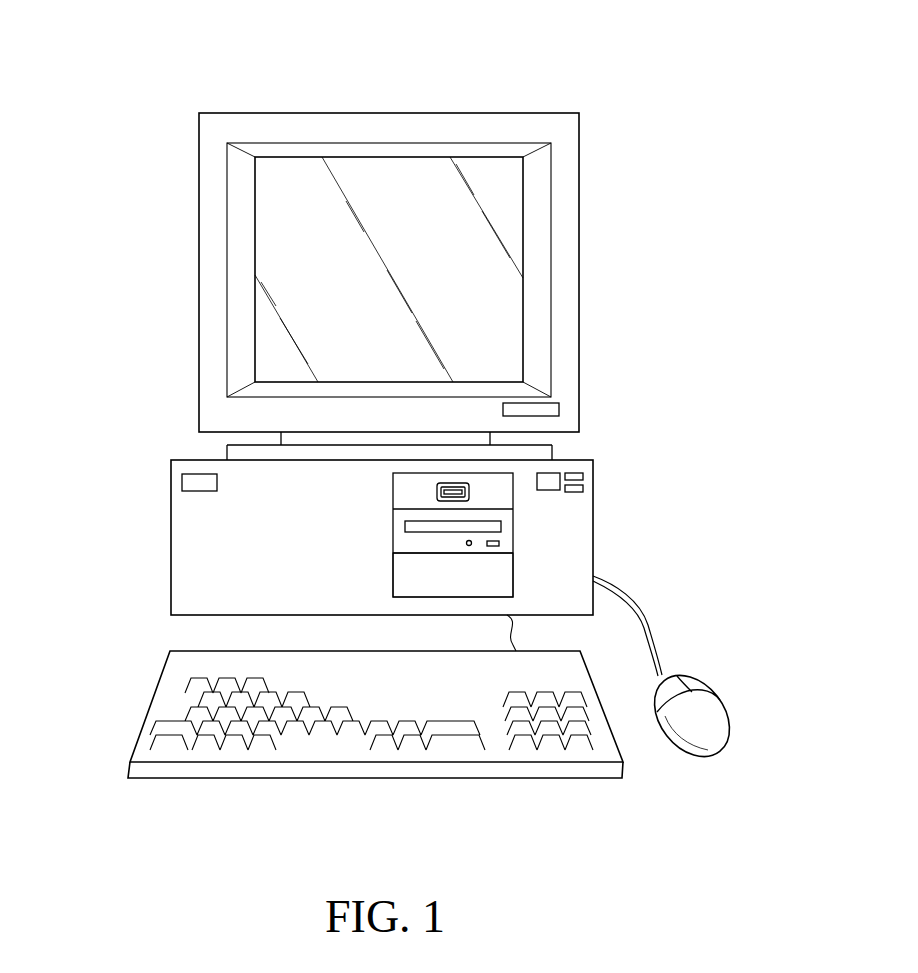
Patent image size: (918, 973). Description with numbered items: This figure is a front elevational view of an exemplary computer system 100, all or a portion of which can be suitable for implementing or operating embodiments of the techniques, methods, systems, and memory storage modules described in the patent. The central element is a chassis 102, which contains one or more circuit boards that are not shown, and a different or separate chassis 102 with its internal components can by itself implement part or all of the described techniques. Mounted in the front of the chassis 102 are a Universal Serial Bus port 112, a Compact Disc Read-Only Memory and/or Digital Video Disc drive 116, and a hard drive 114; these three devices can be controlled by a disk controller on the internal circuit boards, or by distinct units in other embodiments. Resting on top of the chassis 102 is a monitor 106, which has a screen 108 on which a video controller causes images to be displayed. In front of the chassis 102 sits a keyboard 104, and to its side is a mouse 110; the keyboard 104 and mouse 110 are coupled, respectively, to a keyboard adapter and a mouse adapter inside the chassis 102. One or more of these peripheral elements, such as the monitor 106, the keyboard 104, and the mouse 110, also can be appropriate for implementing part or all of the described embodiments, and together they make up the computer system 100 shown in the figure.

The computer system 100 is at (570, 90).
The chassis 102 is at (171, 537).
The keyboard 104 is at (152, 700).
The monitor 106 is at (275, 113).
The screen 108 is at (303, 275).
The mouse 110 is at (712, 705).
The Universal Serial Bus (USB) port 112 is at (470, 487).
The hard drive 114 is at (502, 575).
The CD-ROM and/or DVD drive 116 is at (502, 532).